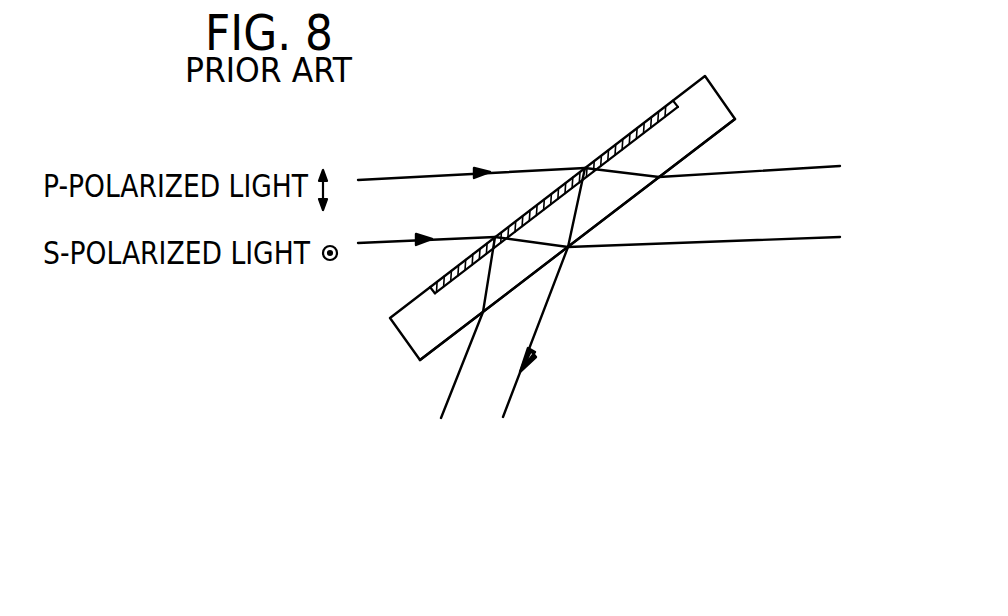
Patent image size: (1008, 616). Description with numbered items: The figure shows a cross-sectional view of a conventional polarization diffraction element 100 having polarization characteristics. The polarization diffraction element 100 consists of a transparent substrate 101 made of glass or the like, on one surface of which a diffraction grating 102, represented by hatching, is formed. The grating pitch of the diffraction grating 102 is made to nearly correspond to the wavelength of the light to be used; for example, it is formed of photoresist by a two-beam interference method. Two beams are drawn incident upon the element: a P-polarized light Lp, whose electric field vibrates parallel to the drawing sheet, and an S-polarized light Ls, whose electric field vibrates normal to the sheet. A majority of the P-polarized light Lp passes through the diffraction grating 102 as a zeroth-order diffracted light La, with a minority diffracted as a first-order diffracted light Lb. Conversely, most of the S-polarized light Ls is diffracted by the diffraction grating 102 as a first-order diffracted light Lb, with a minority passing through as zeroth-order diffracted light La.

The polarization diffraction element 100 is at (730, 92).
The transparent substrate 101 is at (403, 340).
The diffraction grating 102 is at (653, 116).
The P-polarized light Lp is at (393, 178).
The S-polarized light Ls is at (388, 247).
The zeroth-order diffracted light La is at (745, 167).
The first-order diffracted light Lb is at (547, 310).